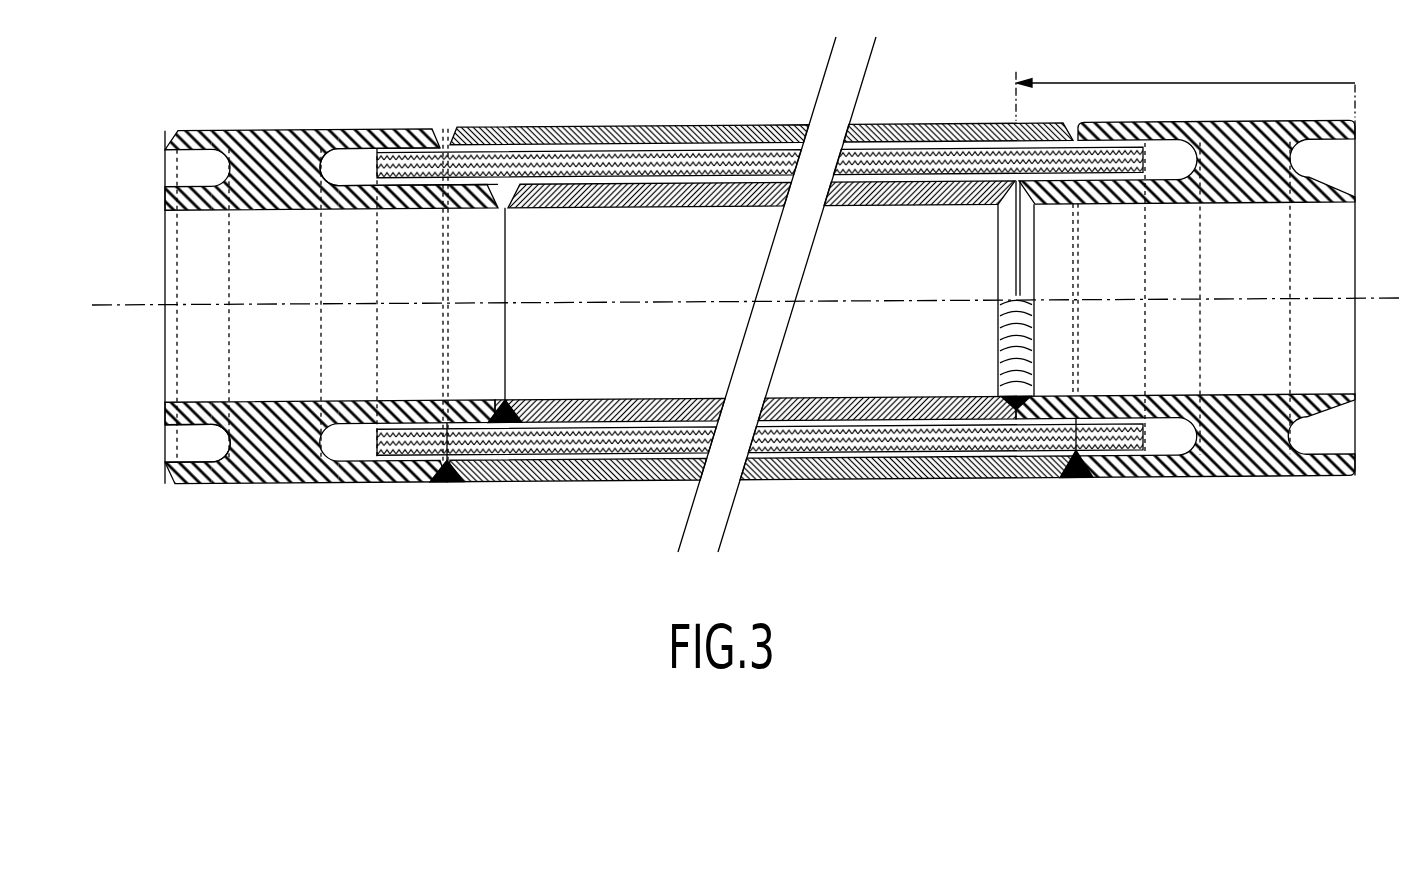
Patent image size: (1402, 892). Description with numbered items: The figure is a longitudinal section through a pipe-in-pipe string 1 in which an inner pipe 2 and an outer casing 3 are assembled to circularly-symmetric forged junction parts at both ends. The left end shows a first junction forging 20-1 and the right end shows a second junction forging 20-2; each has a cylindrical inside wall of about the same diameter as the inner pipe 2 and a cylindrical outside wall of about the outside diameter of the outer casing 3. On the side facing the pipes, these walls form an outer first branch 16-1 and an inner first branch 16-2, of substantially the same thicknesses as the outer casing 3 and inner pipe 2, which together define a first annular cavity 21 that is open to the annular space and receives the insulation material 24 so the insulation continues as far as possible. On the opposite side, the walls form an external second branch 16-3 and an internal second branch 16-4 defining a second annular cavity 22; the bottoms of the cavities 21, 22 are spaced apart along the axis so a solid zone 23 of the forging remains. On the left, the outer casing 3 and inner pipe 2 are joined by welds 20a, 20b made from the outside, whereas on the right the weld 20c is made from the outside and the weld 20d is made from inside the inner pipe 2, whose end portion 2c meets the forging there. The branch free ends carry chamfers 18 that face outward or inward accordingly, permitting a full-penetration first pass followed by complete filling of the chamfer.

The PIP pipe string 1 is at (747, 291).
The inner pipe 2 is at (755, 302).
The end portion of inner tube 2c is at (853, 398).
The outer casing 3 is at (930, 127).
The outer first branch 16-1 is at (390, 130).
The inner first branch 16-2 is at (415, 200).
The external second branch 16-3 is at (186, 134).
The internal second branch 16-4 is at (173, 200).
The chamfer 18 is at (440, 133).
The first junction forging 20-1 is at (296, 280).
The second junction forging 20-2 is at (1242, 493).
The weld 20a is at (447, 482).
The weld 20b is at (523, 421).
The weld 20c is at (1073, 482).
The weld 20d is at (1012, 387).
The first annular cavity 21 is at (348, 166).
The second annular cavity 22 is at (200, 448).
The solid zone 23 is at (263, 190).
The insulation material 24 is at (707, 150).